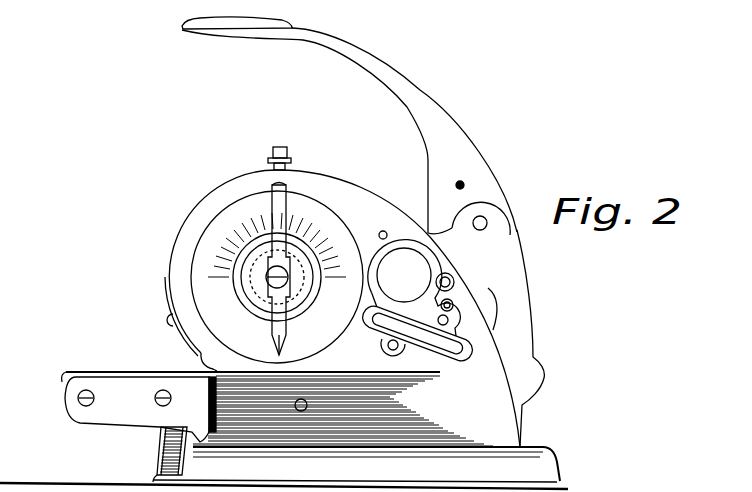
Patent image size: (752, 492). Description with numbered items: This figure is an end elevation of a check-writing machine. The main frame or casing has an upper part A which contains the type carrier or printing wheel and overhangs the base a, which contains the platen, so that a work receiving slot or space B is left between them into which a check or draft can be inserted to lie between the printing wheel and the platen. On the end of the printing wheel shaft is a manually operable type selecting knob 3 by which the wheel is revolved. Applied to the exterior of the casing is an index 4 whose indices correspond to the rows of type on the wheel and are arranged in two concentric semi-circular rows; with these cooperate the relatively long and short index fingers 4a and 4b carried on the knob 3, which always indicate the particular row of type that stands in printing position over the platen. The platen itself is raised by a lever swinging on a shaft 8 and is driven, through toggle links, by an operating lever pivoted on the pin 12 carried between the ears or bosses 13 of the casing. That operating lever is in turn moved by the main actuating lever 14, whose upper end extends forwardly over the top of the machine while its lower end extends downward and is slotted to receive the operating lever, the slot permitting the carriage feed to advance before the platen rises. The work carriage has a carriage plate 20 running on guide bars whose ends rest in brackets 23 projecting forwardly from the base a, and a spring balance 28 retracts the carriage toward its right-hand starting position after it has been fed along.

The casing upper part A is at (176, 244).
The type selecting knob 3 is at (257, 308).
The index 4 is at (277, 277).
The long index finger 4a is at (287, 334).
The short index finger 4b is at (288, 198).
The shaft 8 is at (307, 404).
The pin 12 is at (488, 228).
The bosses 13 is at (486, 208).
The actuating lever 14 is at (458, 148).
The carriage plate 20 is at (86, 372).
The brackets 23 is at (123, 408).
The spring balance 28 is at (160, 452).
The work receiving slot B is at (251, 365).
The base a is at (284, 432).